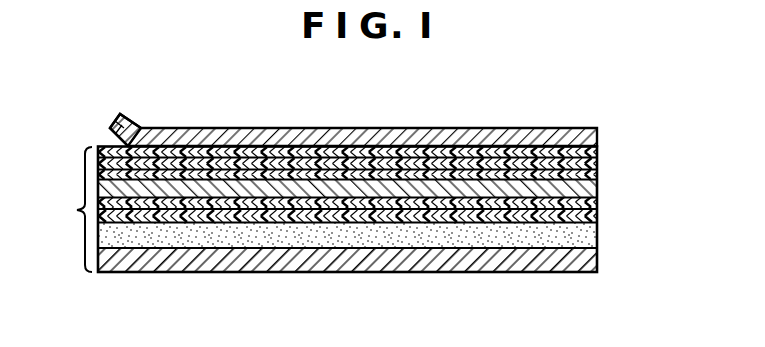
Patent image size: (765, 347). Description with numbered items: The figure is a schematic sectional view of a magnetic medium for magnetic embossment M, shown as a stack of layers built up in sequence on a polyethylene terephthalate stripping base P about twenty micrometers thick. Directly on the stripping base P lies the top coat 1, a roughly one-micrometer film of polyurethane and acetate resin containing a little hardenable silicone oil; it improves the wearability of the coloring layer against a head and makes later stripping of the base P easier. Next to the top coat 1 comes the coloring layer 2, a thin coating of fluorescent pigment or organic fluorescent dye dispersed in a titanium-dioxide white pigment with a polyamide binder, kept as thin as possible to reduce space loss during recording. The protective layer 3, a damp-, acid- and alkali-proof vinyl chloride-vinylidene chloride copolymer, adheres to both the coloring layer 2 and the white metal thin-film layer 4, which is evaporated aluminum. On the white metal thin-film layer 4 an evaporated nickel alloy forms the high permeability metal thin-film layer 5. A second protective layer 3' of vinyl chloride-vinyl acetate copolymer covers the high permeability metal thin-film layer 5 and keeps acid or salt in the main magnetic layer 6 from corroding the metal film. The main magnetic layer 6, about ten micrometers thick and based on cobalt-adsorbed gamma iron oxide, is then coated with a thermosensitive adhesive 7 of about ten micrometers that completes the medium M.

The top coat 1 is at (598, 150).
The coloring layer 2 is at (598, 158).
The protective layer 3 is at (367, 163).
The white metal thin-film layer 4 is at (598, 185).
The high permeability metal thin-film layer 5 is at (598, 202).
The protective layer 3' is at (383, 215).
The main magnetic layer 6 is at (590, 233).
The thermosensitive adhesive 7 is at (590, 262).
The stripping base P is at (131, 127).
The magnetic medium for magnetic embossment M is at (68, 209).